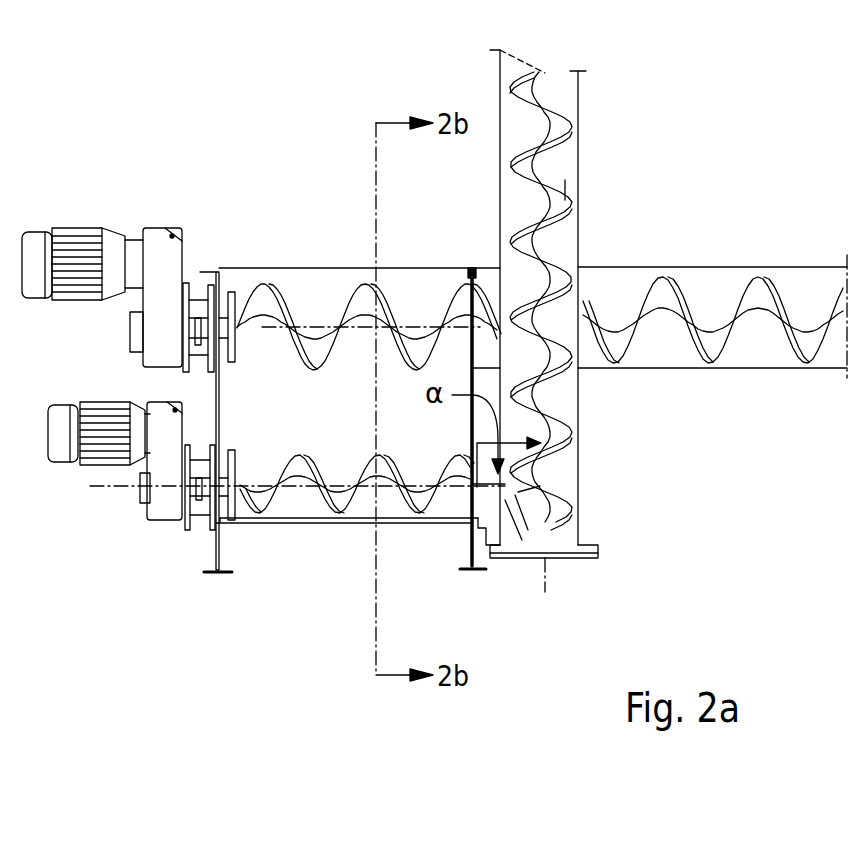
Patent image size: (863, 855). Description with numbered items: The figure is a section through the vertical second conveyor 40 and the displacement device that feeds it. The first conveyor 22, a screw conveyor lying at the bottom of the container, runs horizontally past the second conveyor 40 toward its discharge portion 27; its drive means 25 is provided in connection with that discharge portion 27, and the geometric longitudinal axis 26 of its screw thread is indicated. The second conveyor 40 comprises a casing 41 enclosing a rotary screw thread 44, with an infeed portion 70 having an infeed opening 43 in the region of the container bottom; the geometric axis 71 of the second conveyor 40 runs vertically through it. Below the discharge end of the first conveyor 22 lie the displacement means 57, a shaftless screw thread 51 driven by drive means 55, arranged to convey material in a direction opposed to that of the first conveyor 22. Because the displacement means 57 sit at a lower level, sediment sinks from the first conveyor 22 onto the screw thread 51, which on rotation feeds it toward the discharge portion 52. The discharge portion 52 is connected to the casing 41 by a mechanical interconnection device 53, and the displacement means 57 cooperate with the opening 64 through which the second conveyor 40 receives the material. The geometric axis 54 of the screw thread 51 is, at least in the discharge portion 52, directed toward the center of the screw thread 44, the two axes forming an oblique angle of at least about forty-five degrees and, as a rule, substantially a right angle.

The first conveyor 22 is at (703, 266).
The drive means 25 is at (72, 228).
The geometric longitudinal axis 26 is at (312, 270).
The discharge portion 27 is at (420, 270).
The second conveyor 40 is at (585, 136).
The casing 41 is at (565, 175).
The infeed opening 43 is at (520, 505).
The rotary screw thread 44 is at (572, 190).
The screw thread 51 is at (325, 500).
The discharge portion 52 is at (465, 548).
The mechanical interconnection device 53 is at (492, 455).
The geometric axis 54 is at (126, 486).
The drive means 55 is at (86, 402).
The displacement means 57 is at (373, 525).
The opening 64 is at (518, 500).
The infeed portion 70 is at (582, 468).
The geometric axis 71 is at (548, 578).